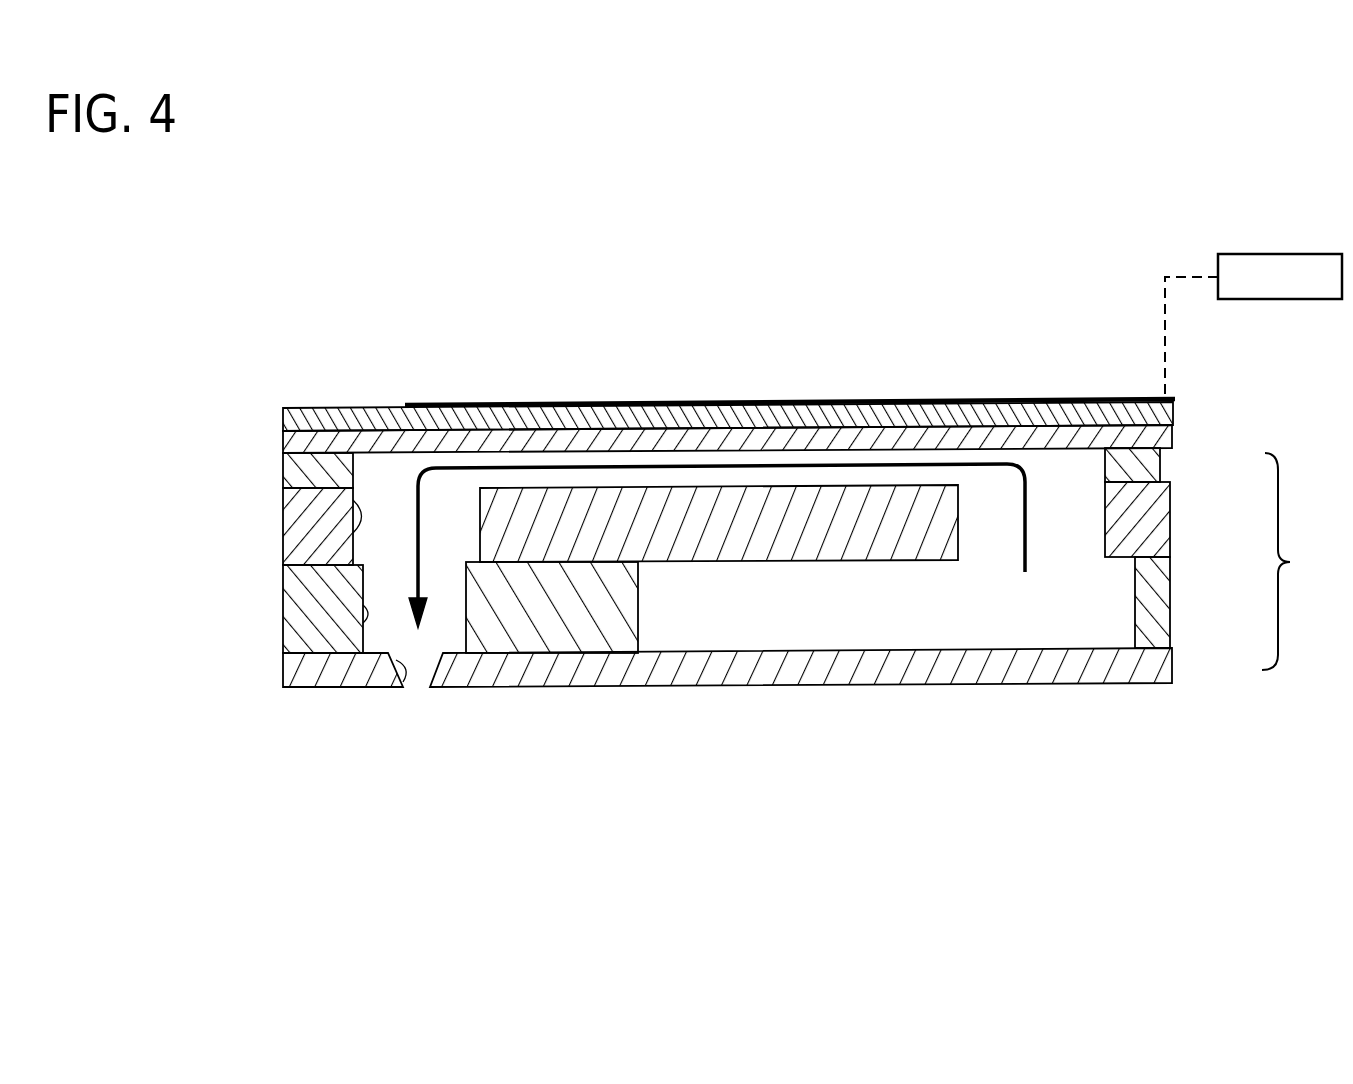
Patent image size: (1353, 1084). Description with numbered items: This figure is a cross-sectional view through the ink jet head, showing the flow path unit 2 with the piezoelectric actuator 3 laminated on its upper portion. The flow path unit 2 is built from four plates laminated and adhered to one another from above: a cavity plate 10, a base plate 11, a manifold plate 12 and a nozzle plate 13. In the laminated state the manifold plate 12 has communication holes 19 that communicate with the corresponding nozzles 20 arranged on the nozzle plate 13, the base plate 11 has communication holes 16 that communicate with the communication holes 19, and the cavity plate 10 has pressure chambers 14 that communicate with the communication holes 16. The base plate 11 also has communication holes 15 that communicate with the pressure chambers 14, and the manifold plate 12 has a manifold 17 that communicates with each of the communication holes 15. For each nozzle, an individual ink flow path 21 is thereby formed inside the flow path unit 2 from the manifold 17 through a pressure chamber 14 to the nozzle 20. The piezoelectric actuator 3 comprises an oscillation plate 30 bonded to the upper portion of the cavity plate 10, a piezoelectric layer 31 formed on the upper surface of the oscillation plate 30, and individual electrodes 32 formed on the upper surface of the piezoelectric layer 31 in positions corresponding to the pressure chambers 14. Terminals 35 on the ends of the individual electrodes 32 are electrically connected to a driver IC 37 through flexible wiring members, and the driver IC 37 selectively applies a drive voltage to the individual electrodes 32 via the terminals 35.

The flow path unit 2 is at (1290, 561).
The piezoelectric actuator 3 is at (988, 362).
The cavity plate 10 is at (1160, 456).
The base plate 11 is at (1158, 516).
The manifold plate 12 is at (1165, 596).
The nozzle plate 13 is at (1158, 660).
The pressure chamber 14 is at (356, 483).
The communication hole 15 is at (958, 515).
The communication hole 16 is at (356, 536).
The manifold 17 is at (642, 612).
The communication hole 19 is at (362, 627).
The nozzle 20 is at (403, 688).
The individual ink flow path 21 is at (609, 467).
The oscillation plate 30 is at (1166, 441).
The piezoelectric layer 31 is at (1168, 420).
The individual electrode 32 is at (763, 403).
The terminal 35 is at (1128, 398).
The driver IC 37 is at (1240, 254).